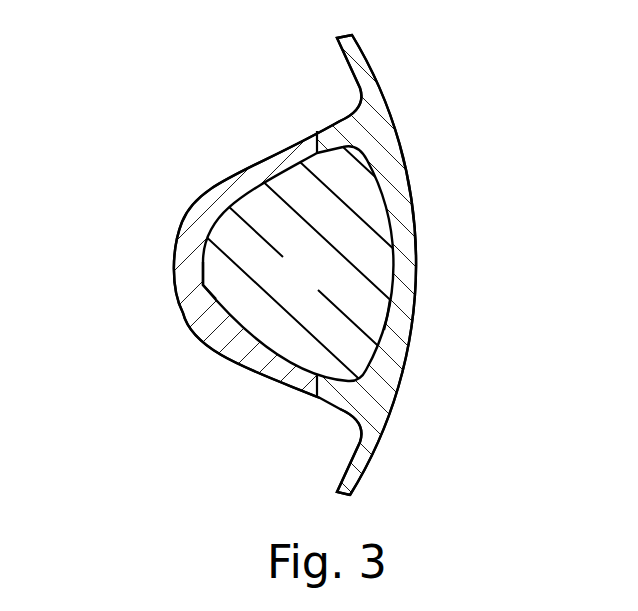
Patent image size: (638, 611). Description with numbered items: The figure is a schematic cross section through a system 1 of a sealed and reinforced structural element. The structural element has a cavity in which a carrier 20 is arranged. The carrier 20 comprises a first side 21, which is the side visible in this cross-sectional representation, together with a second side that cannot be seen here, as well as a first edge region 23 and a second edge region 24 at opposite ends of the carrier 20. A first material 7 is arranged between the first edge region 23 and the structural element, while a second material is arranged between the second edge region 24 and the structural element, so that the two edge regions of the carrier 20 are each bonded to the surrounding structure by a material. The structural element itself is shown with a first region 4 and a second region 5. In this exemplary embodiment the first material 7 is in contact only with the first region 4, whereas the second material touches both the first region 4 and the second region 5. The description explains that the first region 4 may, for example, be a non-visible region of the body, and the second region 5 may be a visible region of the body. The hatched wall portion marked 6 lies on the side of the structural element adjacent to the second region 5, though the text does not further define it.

The system 1 is at (185, 128).
The first region 4 is at (197, 197).
The second region 5 is at (403, 168).
The wall of second shell part 6 is at (402, 222).
The first material 7 is at (183, 262).
The carrier 20 is at (393, 263).
The first side 21 is at (312, 278).
The first edge region 23 is at (202, 288).
The second edge region 24 is at (393, 313).